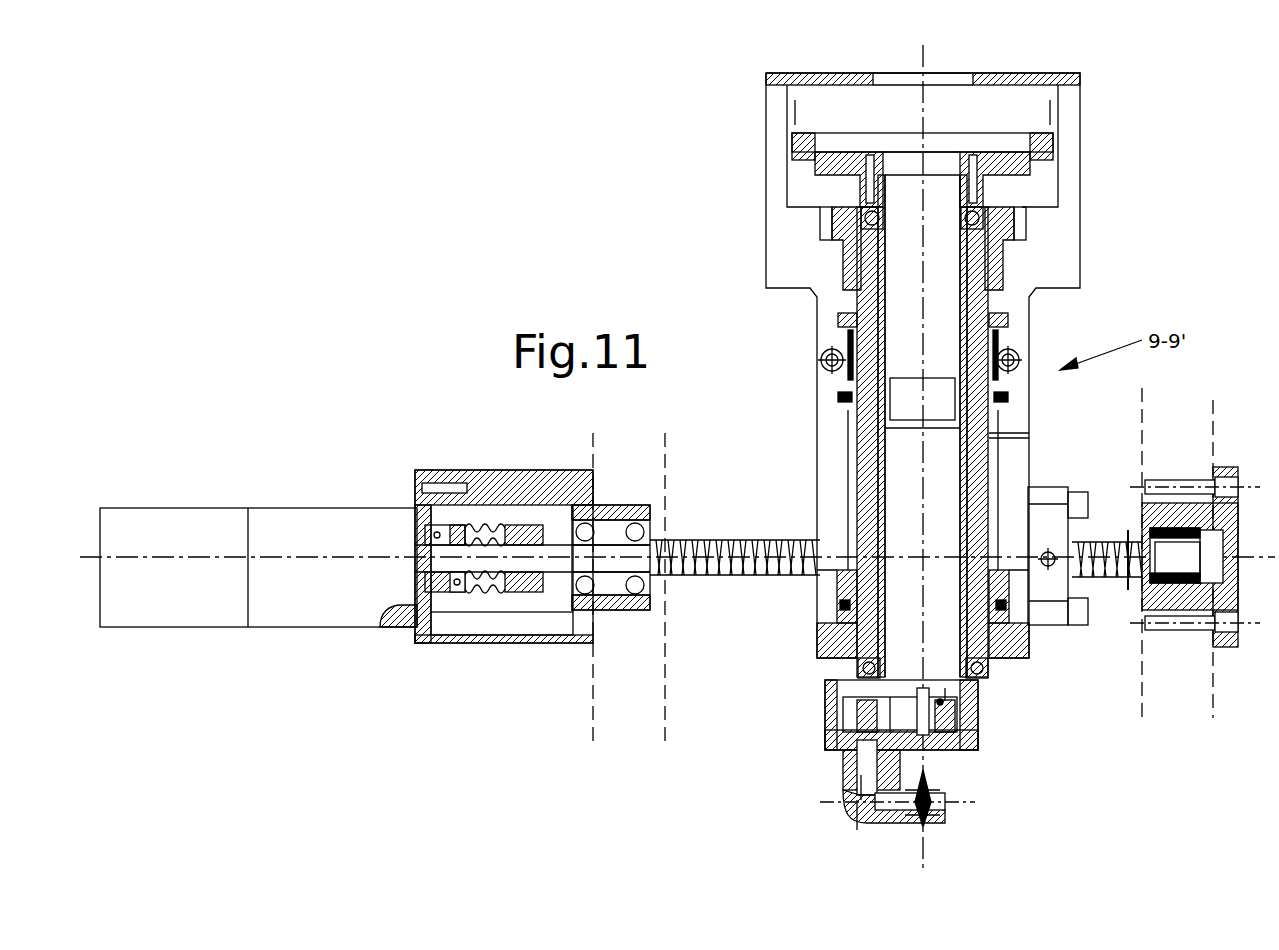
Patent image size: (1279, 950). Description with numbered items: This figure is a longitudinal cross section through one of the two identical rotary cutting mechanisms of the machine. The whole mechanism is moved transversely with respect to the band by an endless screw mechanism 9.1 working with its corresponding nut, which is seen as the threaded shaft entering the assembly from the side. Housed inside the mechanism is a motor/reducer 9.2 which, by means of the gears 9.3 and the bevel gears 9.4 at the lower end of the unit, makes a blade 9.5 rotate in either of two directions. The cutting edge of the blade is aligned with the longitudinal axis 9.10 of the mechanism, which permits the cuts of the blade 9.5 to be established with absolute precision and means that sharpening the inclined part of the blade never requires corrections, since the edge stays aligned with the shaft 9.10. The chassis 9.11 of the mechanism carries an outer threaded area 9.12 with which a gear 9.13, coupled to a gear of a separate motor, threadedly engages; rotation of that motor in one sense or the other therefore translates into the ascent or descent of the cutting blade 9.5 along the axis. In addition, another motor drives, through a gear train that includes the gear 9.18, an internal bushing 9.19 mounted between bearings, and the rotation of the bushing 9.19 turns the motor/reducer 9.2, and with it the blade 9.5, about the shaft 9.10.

The endless screw mechanism 9.1 is at (715, 530).
The motor/reducer 9.2 is at (922, 426).
The gears 9.3 is at (970, 752).
The bevel gears 9.4 is at (862, 806).
The blade 9.5 is at (928, 822).
The longitudinal axis 9.10 is at (922, 100).
The chassis 9.11 is at (977, 310).
The outer threaded area 9.12 is at (1000, 262).
The gear 9.13 is at (1020, 219).
The gear 9.18 is at (800, 150).
The internal bushing 9.19 is at (878, 204).